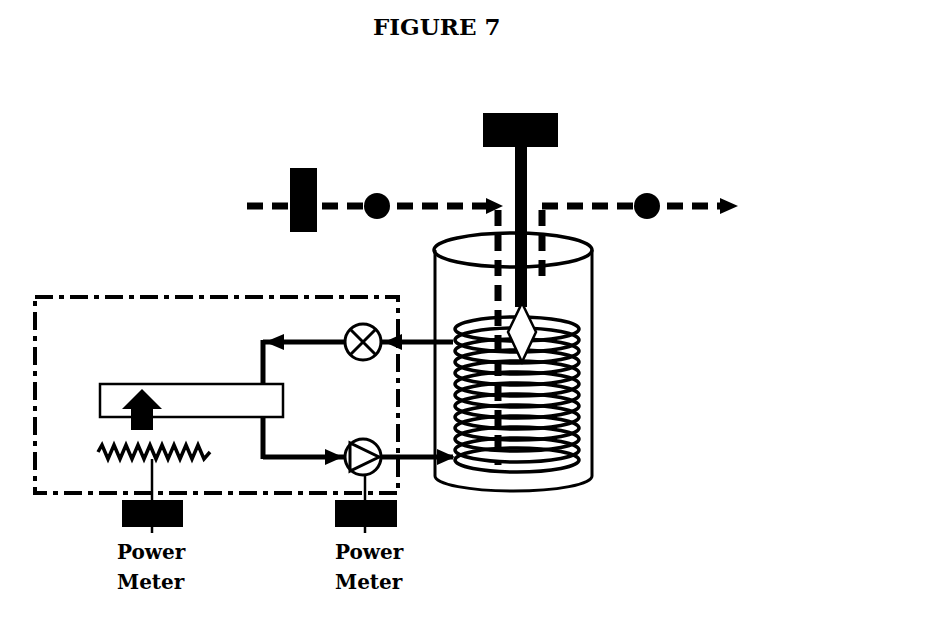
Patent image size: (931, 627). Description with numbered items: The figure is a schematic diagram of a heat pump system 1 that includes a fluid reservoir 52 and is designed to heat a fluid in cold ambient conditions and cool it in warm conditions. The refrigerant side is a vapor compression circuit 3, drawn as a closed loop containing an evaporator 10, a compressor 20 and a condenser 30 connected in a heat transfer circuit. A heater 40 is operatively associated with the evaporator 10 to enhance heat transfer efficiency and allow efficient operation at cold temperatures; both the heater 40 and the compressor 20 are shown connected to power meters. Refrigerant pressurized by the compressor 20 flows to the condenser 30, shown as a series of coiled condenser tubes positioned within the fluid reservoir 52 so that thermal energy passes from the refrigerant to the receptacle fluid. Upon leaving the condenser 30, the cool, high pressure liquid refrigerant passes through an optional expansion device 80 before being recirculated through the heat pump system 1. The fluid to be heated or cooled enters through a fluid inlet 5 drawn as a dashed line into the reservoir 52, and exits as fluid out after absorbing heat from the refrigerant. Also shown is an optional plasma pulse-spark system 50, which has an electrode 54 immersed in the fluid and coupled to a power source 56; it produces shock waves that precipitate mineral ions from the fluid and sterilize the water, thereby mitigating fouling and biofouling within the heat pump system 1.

The heat pump system 1 is at (662, 384).
The vapor compression circuit 3 is at (262, 358).
The fluid inlet 5 is at (560, 298).
The evaporator 10 is at (191, 407).
The compressor 20 is at (363, 439).
The condenser 30 is at (580, 438).
The heater 40 is at (100, 452).
The plasma pulse-spark system 50 is at (628, 240).
The fluid reservoir 52 is at (592, 271).
The electrode 54 is at (528, 324).
The power source 56 is at (521, 113).
The expansion device 80 is at (363, 360).